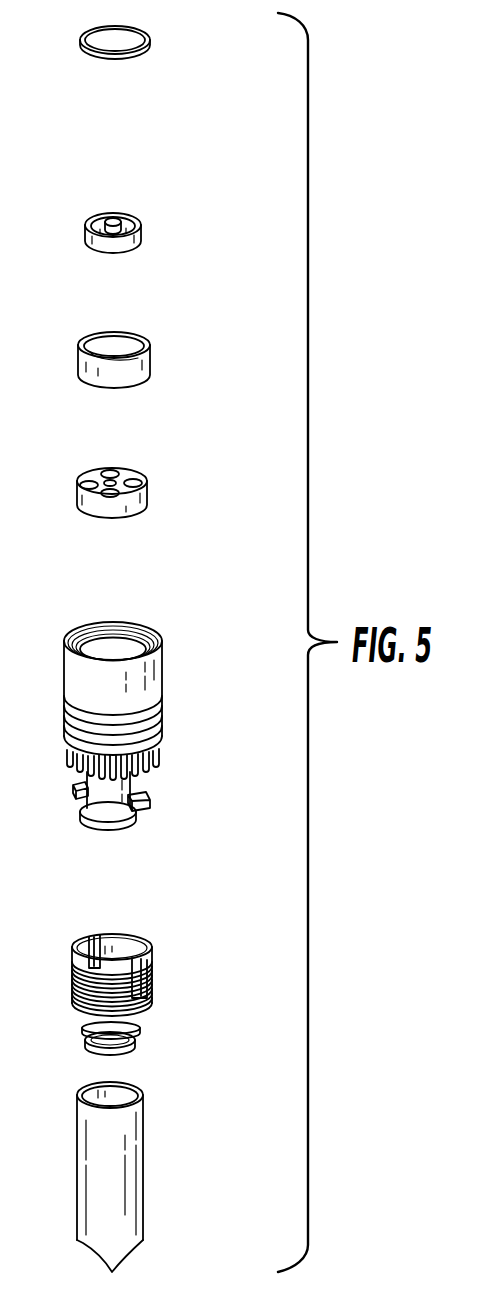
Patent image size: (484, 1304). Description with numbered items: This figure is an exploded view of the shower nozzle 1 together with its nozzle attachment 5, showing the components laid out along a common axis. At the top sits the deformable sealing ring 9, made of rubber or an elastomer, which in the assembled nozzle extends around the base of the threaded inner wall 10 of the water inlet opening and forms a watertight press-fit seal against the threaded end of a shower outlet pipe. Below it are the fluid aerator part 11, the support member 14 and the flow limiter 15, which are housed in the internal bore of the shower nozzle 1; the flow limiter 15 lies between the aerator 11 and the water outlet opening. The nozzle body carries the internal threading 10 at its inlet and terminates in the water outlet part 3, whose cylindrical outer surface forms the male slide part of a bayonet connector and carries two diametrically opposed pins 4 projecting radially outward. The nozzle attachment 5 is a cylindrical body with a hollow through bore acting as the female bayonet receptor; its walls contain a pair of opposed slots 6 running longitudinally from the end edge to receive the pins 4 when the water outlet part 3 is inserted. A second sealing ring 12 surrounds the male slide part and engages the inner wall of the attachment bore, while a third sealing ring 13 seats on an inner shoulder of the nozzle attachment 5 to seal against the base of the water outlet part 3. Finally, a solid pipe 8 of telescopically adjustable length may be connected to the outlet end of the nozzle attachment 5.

The shower nozzle 1 is at (112, 709).
The water outlet part 3 is at (125, 823).
The pins 4 is at (148, 803).
The nozzle attachment 5 is at (124, 946).
The slots 6 is at (90, 940).
The pipe 8 is at (145, 1152).
The sealing ring 9 is at (146, 48).
The threaded inner wall 10 is at (130, 620).
The fluid aerator part 11 is at (137, 213).
The second sealing ring 12 is at (140, 1030).
The third sealing ring 13 is at (132, 1052).
The support member 14 is at (148, 338).
The flow limiter 15 is at (136, 478).